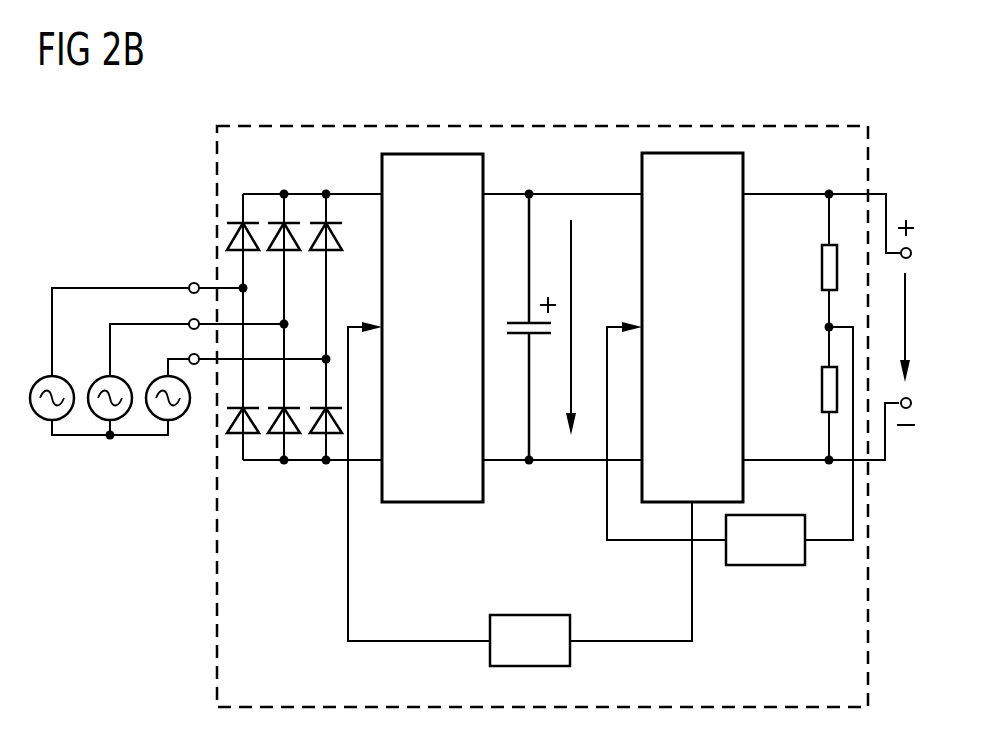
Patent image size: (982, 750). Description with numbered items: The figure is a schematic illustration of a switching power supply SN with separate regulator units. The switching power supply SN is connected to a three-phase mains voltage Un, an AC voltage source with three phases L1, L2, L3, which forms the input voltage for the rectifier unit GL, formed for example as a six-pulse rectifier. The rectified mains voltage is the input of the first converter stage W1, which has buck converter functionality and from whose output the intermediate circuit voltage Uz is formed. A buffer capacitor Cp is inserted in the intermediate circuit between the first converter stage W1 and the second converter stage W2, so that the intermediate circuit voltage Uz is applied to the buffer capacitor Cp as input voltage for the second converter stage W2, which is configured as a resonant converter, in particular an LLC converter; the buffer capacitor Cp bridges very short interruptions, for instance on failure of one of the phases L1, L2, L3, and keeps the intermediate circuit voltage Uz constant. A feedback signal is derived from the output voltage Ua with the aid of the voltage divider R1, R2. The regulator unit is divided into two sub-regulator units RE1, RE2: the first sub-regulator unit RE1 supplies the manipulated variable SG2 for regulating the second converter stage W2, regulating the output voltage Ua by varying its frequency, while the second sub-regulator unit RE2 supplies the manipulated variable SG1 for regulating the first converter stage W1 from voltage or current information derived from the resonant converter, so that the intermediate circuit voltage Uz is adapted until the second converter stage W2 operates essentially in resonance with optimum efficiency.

The switching power supply SN is at (552, 126).
The three-phase mains voltage Un is at (110, 427).
The phase L1 is at (147, 317).
The phase L2 is at (197, 335).
The phase L3 is at (245, 352).
The rectifier unit GL is at (304, 347).
The first converter stage W1 is at (432, 328).
The buffer capacitor Cp is at (525, 327).
The intermediate circuit voltage Uz is at (585, 327).
The second converter stage W2 is at (692, 327).
The voltage divider resistor R1 is at (814, 261).
The voltage divider resistor R2 is at (812, 396).
The output voltage Ua is at (921, 322).
The first sub-regulator unit RE1 is at (789, 446).
The second sub-regulator unit RE2 is at (591, 584).
The manipulated variable SG1 is at (419, 481).
The manipulated variable SG2 is at (641, 431).